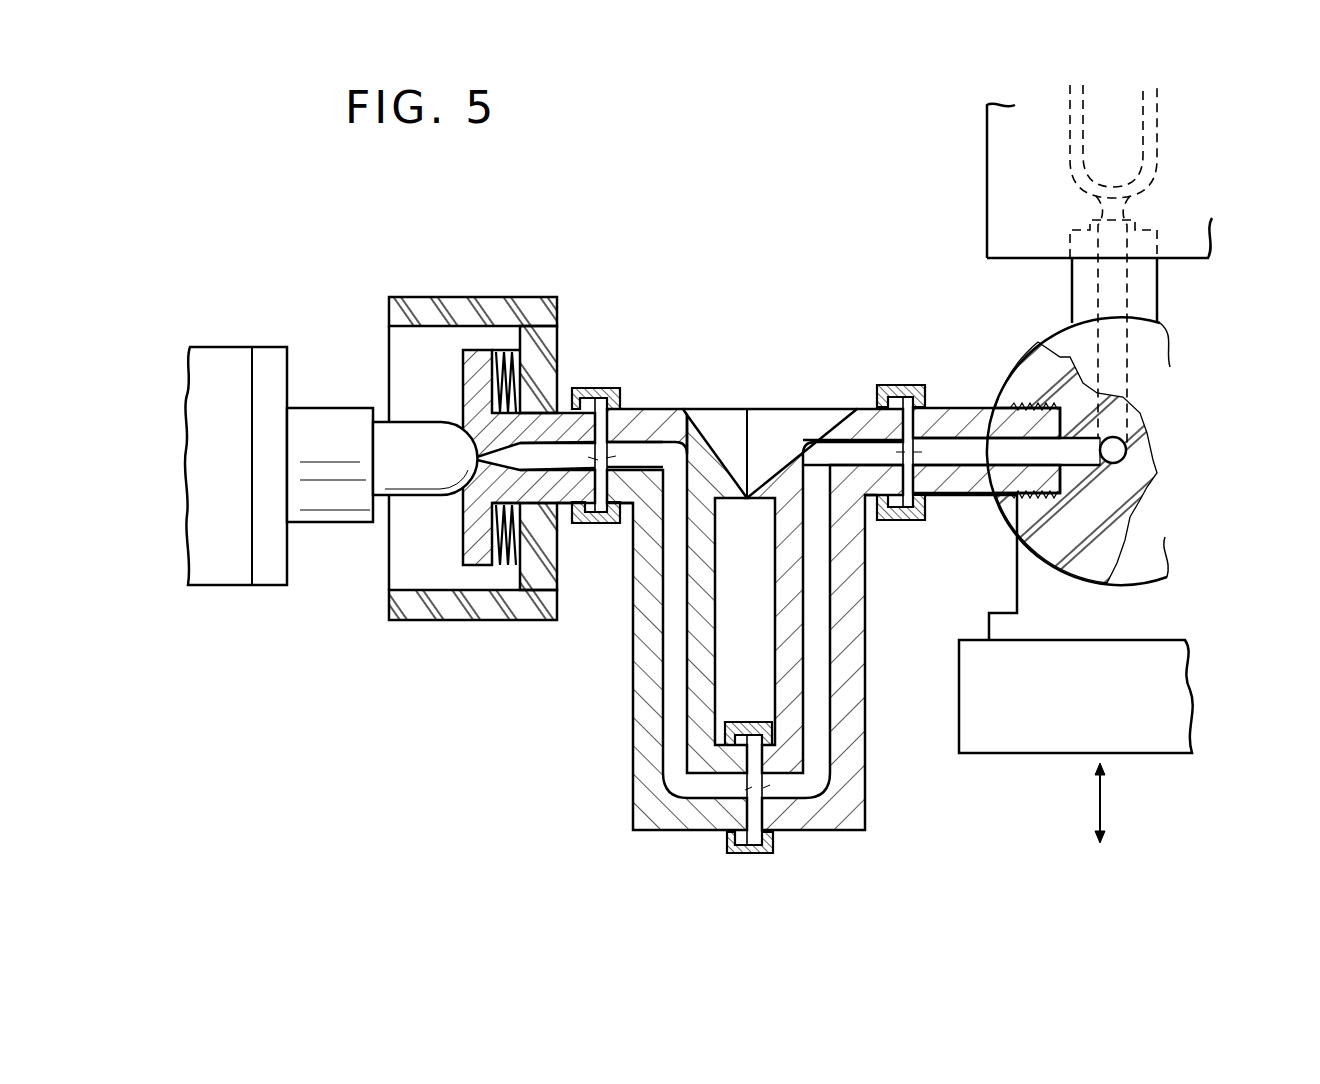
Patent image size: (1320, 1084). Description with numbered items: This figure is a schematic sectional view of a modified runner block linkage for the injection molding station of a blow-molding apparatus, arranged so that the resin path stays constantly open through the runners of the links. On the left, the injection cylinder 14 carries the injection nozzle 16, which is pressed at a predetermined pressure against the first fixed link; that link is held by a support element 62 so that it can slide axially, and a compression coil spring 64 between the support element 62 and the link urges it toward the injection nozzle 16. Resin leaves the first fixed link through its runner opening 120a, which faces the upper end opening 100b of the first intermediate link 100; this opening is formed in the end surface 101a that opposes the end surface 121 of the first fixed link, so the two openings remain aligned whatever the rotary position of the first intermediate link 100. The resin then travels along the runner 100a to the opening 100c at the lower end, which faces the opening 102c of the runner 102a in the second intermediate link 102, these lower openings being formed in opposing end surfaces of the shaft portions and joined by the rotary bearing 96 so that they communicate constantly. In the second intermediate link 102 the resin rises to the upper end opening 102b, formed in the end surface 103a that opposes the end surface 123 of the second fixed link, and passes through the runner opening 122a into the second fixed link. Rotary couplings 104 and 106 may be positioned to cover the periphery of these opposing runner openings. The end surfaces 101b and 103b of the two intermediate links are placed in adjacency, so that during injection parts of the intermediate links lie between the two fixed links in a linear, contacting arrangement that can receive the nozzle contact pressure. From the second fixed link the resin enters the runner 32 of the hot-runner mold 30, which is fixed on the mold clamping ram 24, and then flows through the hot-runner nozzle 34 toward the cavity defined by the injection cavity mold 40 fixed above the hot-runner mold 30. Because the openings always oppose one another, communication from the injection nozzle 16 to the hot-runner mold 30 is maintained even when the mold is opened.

The injection cylinder 14 is at (215, 340).
The injection nozzle 16 is at (407, 413).
The support element 62 is at (523, 296).
The compression coil spring 64 is at (540, 412).
The runner opening 120a is at (570, 400).
The end surface 101a is at (608, 456).
The end surface 101b is at (745, 450).
The first intermediate link 100 is at (633, 655).
The runner 100a is at (653, 748).
The upper end opening 100b is at (693, 409).
The opening 100c is at (718, 812).
The second intermediate link 102 is at (845, 822).
The runner 102a is at (813, 660).
The upper end opening 102b is at (880, 440).
The opening 102c is at (795, 815).
The end surface 103a is at (900, 440).
The end surface 103b is at (752, 450).
The rotary coupling 104 is at (598, 524).
The rotary coupling 106 is at (897, 521).
The end surface 121 is at (565, 507).
The runner opening 122a is at (925, 438).
The end surface 123 is at (928, 493).
The rotary bearing 96 is at (748, 855).
The hot-runner mold 30 is at (1163, 325).
The runner 32 is at (1118, 448).
The hot-runner nozzle 34 is at (1147, 283).
The injection cavity mold 40 is at (1000, 178).
The mold clamping ram 24 is at (1185, 718).